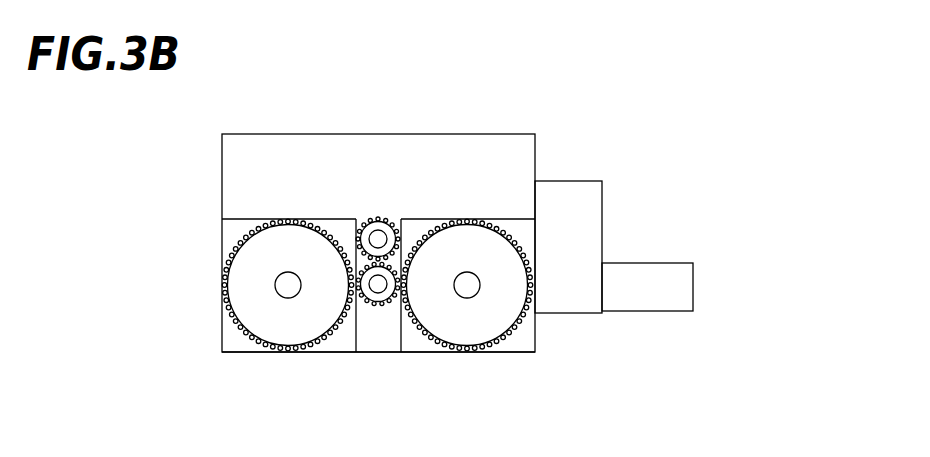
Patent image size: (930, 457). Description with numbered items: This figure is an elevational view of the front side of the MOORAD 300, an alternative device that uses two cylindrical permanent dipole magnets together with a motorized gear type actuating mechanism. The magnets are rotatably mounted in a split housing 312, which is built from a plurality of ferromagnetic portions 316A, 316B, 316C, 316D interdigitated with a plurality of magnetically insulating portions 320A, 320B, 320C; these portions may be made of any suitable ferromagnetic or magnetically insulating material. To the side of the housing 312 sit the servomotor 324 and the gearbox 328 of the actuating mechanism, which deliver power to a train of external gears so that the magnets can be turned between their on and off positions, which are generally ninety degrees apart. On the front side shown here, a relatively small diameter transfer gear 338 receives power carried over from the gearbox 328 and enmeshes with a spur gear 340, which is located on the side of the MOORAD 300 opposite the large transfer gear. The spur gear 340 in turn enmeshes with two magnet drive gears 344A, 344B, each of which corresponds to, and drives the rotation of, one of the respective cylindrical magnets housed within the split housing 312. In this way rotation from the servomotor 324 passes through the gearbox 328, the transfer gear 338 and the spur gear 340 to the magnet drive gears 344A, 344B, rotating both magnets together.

The MOORAD 300 is at (648, 133).
The split housing 312 is at (460, 124).
The ferromagnetic portion 316A is at (233, 357).
The ferromagnetic portion 316B is at (332, 353).
The ferromagnetic portion 316C is at (425, 348).
The ferromagnetic portion 316D is at (518, 355).
The magnetically insulating portion 320A is at (288, 355).
The magnetically insulating portion 320B is at (372, 357).
The magnetically insulating portion 320C is at (467, 353).
The servomotor 324 is at (677, 263).
The gearbox 328 is at (612, 206).
The transfer gear 338 is at (373, 219).
The spur gear 340 is at (374, 307).
The magnet drive gear 344A is at (248, 260).
The magnet drive gear 344B is at (502, 322).